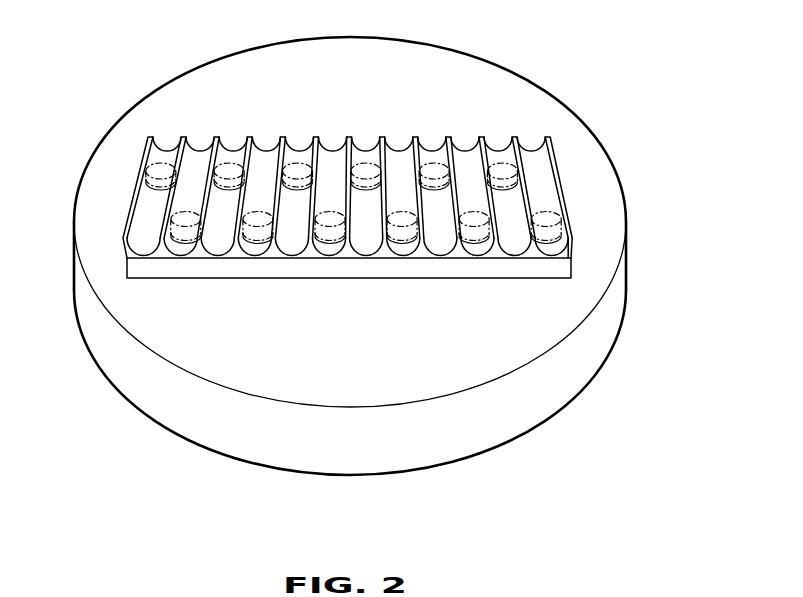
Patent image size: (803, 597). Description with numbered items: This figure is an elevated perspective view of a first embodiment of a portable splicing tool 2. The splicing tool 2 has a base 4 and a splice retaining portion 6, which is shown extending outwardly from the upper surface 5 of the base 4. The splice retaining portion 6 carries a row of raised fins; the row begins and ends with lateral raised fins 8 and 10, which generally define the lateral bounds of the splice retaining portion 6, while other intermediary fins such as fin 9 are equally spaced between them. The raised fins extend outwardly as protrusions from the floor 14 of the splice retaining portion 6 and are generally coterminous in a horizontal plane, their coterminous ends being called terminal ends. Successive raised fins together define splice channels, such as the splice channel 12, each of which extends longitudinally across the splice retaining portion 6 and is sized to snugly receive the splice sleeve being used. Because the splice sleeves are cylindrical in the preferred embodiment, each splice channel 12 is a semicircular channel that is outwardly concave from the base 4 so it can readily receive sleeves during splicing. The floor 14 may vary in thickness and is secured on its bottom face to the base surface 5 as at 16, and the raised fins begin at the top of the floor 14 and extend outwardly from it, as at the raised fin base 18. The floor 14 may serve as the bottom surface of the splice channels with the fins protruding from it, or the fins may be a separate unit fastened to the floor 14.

The portable splicing tool 2 is at (670, 82).
The base 4 is at (123, 358).
The upper surface of the base 5 is at (90, 205).
The splice retaining portion 6 is at (125, 130).
The lateral raised fin 8 is at (148, 137).
The intermediary fin 9 is at (314, 137).
The lateral raised fin 10 is at (548, 137).
The splice channel 12 is at (265, 157).
The floor 14 is at (550, 275).
The securement of floor to base surface 16 is at (523, 280).
The raised fin base 18 is at (573, 247).